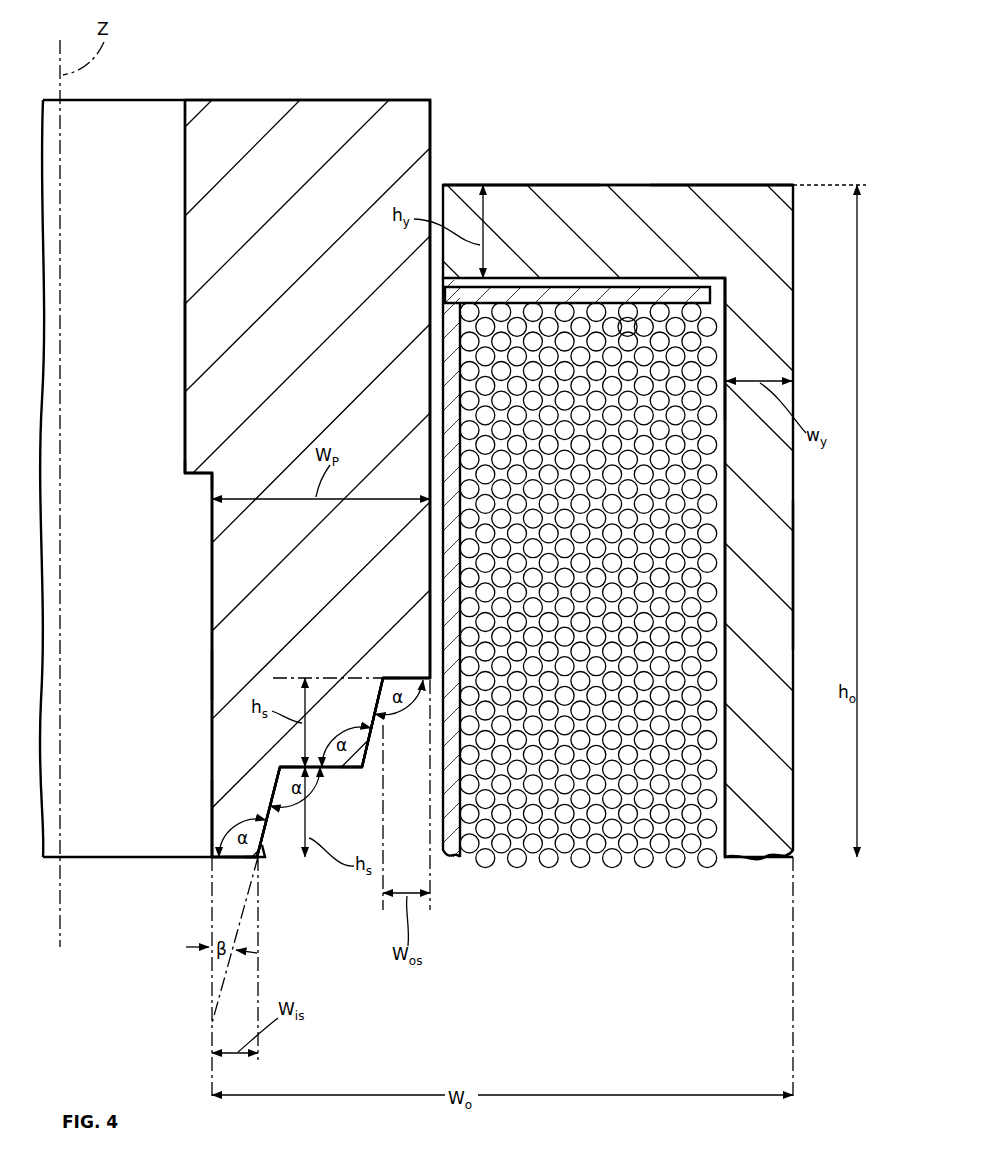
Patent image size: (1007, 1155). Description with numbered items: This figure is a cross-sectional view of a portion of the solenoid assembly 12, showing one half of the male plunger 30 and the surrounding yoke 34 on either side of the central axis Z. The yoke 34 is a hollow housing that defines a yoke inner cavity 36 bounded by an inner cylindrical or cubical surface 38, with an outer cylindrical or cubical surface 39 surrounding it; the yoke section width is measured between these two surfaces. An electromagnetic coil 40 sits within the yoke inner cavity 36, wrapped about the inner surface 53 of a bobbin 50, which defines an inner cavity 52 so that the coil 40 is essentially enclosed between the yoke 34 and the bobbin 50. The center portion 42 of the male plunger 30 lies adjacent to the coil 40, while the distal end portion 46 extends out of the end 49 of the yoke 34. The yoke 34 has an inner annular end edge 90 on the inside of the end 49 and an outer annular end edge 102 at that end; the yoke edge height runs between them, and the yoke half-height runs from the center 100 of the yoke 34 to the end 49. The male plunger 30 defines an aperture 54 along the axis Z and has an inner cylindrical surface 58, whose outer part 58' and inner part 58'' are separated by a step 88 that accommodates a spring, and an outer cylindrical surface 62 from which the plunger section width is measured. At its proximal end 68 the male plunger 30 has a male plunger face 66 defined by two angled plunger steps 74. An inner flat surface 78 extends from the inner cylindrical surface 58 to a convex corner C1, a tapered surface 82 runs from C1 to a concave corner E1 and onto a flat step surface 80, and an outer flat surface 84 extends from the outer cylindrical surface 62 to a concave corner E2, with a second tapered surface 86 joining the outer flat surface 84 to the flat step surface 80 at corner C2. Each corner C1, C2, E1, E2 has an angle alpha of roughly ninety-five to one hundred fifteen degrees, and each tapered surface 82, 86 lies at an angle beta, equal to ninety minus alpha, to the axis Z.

The solenoid assembly 12 is at (548, 83).
The male plunger 30 is at (181, 181).
The yoke 34 is at (795, 281).
The yoke inner cavity 36 is at (762, 491).
The inner cylindrical or cubical surface 38 is at (727, 330).
The outer cylindrical or cubical surface 39 is at (795, 580).
The electromagnetic coil 40 is at (588, 585).
The center portion 42 is at (237, 668).
The distal end portion 46 is at (330, 128).
The end 49 is at (579, 183).
The bobbin 50 is at (560, 295).
The inner cavity 52 is at (624, 327).
The inner surface 53 is at (455, 352).
The aperture 54 is at (200, 493).
The inner cylindrical surface 58 is at (179, 753).
The outer part of the inner cylindrical surface 58' is at (148, 386).
The inner part of the inner cylindrical surface 58'' is at (172, 586).
The outer cylindrical surface 62 is at (431, 131).
The male plunger face 66 is at (260, 860).
The proximal end 68 is at (204, 831).
The angled plunger steps 74 is at (265, 817).
The inner flat surface 78 is at (232, 861).
The flat step surface 80 is at (330, 769).
The tapered surface 82 is at (263, 851).
The outer flat surface 84 is at (408, 677).
The tapered surface 86 is at (370, 751).
The step 88 is at (190, 485).
The inner annular end edge 90 is at (712, 289).
The center 100 is at (758, 859).
The outer annular end edge 102 is at (708, 185).
The convex corner C1 is at (239, 861).
The convex corner C2 is at (360, 769).
The concave corner E1 is at (279, 767).
The concave corner E2 is at (383, 677).